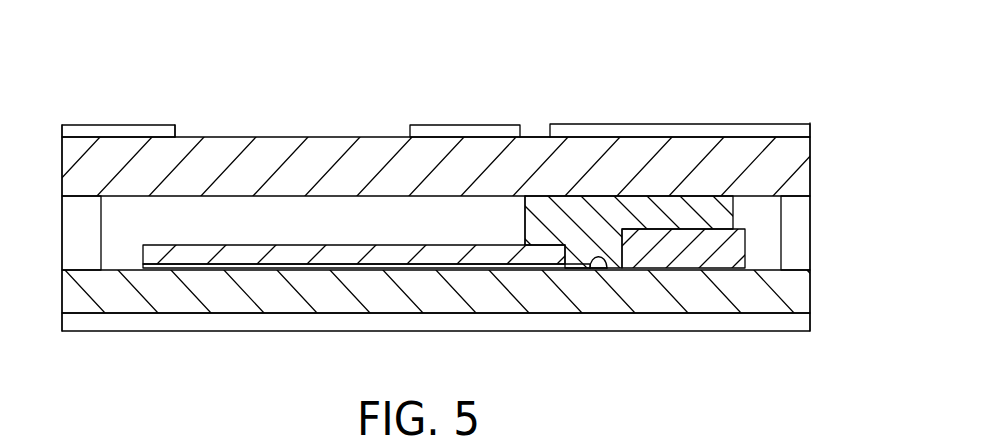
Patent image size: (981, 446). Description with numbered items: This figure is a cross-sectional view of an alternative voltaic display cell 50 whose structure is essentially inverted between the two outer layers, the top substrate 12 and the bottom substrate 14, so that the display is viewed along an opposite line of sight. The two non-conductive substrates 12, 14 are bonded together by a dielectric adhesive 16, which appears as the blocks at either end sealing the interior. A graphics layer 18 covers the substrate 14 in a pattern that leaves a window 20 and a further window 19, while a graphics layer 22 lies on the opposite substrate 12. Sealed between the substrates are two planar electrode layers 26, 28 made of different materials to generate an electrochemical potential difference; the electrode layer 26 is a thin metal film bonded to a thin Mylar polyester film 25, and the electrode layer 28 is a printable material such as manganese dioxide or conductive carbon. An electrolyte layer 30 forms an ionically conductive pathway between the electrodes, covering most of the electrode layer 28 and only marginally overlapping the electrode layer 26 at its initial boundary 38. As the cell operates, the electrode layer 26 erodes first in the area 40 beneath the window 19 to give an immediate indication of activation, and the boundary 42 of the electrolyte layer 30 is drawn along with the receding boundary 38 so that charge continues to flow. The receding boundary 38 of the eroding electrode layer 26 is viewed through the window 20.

The display cell 50 is at (143, 110).
The bottom substrate 14 is at (388, 160).
The graphics layer 18 is at (148, 134).
The window 20 is at (176, 133).
The window 19 is at (524, 128).
The dielectric adhesive 16 is at (70, 256).
The electrolyte layer 30 is at (607, 207).
The boundary of the electrolyte layer 42 is at (525, 223).
The electrode layer 28 is at (673, 268).
The electrode layer 26 is at (283, 253).
The Mylar polyester film 25 is at (217, 270).
The boundary of the electrode layer 38 is at (543, 270).
The area 40 is at (607, 268).
The top substrate 12 is at (802, 288).
The graphics layer 22 is at (713, 323).